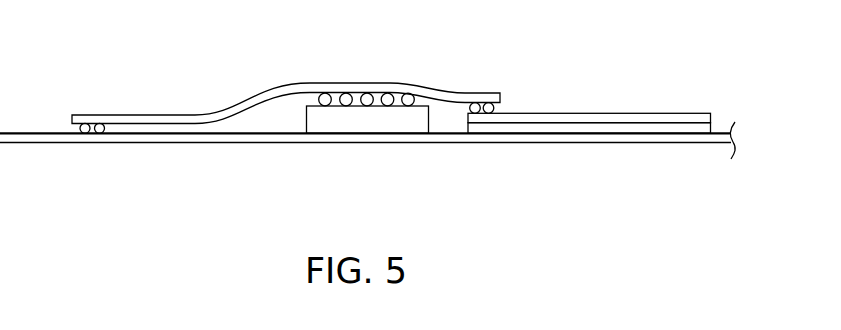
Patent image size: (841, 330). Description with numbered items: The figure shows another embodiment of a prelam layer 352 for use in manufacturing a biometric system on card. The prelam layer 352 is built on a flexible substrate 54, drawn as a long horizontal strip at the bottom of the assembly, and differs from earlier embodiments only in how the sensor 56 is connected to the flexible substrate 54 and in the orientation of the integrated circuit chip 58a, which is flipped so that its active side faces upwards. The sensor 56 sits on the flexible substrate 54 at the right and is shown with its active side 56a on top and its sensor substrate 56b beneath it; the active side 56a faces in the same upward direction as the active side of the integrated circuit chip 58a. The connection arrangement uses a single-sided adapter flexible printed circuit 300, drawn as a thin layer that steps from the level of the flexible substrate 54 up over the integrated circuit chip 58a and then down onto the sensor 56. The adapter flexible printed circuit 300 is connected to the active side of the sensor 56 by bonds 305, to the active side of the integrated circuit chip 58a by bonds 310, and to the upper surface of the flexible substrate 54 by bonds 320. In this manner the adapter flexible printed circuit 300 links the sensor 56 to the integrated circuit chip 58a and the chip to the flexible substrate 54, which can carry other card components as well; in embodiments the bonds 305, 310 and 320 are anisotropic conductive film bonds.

The flexible substrate 54 is at (672, 140).
The sensor 56 is at (606, 99).
The active side of the sensor 56a is at (607, 115).
The sensor substrate 56b is at (563, 128).
The integrated circuit chip 58a is at (366, 123).
The single-sided adapter flexible printed circuit 300 is at (228, 112).
The bonds 305 is at (494, 107).
The bonds 310 is at (408, 94).
The bonds 320 is at (108, 130).
The prelam layer 352 is at (259, 171).